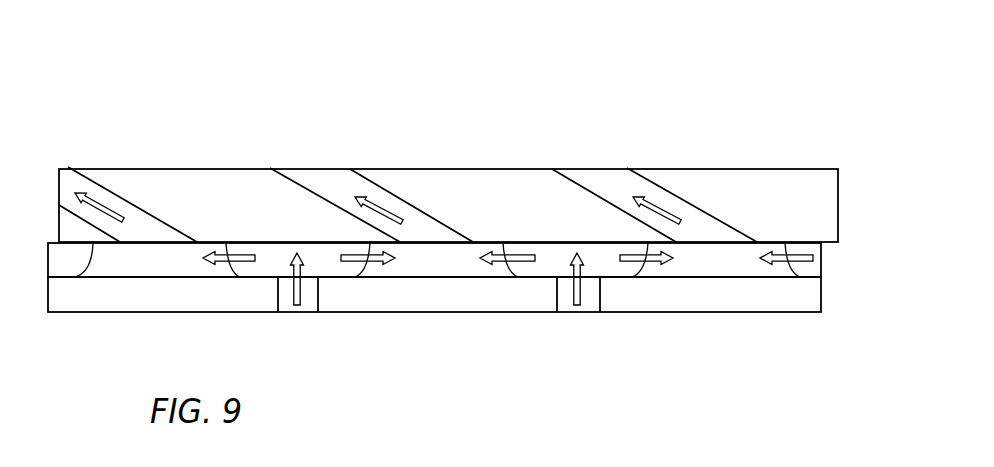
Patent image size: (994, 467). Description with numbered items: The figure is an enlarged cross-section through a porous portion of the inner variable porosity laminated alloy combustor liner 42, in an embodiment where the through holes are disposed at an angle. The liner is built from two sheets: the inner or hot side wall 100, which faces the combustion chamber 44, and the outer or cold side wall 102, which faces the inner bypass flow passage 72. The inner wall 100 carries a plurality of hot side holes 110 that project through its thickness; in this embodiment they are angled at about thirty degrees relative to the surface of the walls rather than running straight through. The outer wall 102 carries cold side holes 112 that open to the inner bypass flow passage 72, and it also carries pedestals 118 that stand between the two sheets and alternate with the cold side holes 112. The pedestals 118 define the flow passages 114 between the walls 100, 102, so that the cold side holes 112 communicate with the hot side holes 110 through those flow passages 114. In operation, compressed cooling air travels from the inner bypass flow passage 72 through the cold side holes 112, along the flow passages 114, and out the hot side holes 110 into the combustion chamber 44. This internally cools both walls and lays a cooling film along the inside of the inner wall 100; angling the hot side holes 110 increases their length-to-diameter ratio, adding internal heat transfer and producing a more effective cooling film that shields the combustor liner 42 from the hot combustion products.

The inner variable porosity Lamilloy combustor liner 42 is at (646, 94).
The combustion chamber 44 is at (330, 54).
The inner bypass flow passage 72 is at (313, 454).
The inner wall 100 is at (483, 190).
The outer wall 102 is at (457, 293).
The hot side holes 110 is at (386, 192).
The cold side holes 112 is at (315, 290).
The flow passages 114 is at (562, 257).
The pedestals 118 is at (213, 241).